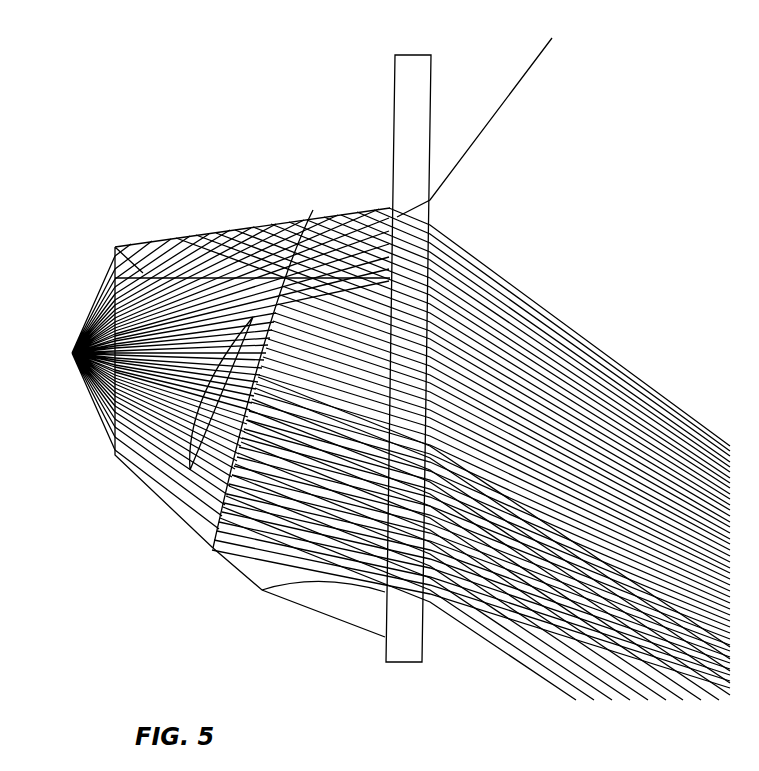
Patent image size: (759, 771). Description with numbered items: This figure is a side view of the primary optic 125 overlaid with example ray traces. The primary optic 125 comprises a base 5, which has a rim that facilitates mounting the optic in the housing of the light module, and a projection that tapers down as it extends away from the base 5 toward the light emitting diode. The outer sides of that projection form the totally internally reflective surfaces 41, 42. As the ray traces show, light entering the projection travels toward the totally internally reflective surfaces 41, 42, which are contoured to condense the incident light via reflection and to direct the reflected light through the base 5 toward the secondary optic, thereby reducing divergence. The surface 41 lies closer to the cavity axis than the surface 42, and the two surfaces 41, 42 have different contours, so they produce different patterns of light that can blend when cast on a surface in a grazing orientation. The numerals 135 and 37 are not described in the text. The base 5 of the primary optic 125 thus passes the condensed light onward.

The light source 135 is at (56, 344).
The totally internally reflective surface 42 is at (238, 206).
The totally internally reflective surface 41 is at (229, 582).
The bottom surface 37 is at (343, 608).
The base 5 is at (377, 114).
The primary optic 125 is at (302, 58).